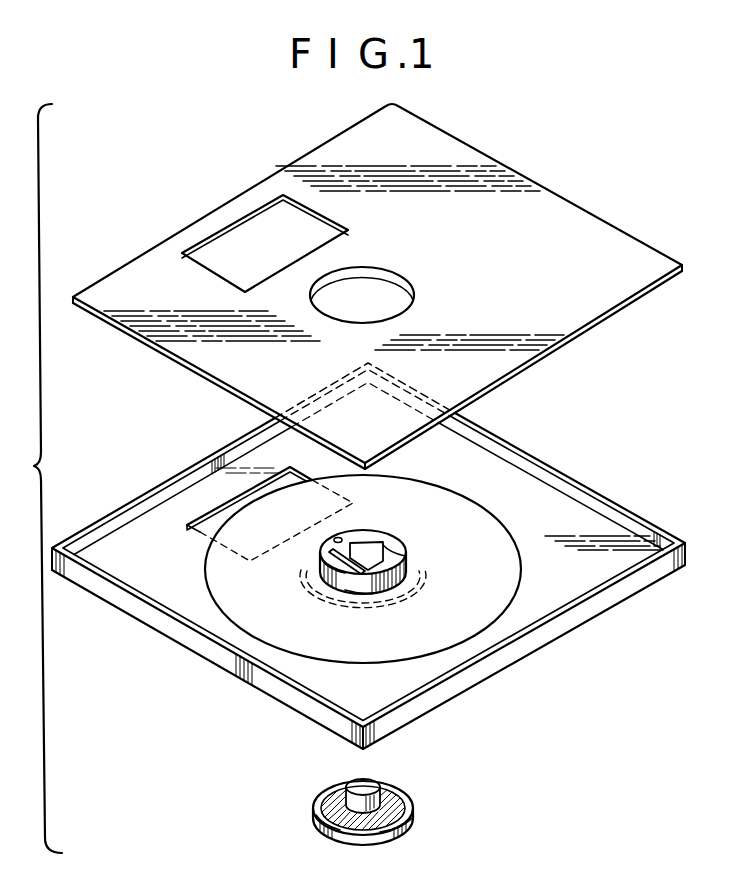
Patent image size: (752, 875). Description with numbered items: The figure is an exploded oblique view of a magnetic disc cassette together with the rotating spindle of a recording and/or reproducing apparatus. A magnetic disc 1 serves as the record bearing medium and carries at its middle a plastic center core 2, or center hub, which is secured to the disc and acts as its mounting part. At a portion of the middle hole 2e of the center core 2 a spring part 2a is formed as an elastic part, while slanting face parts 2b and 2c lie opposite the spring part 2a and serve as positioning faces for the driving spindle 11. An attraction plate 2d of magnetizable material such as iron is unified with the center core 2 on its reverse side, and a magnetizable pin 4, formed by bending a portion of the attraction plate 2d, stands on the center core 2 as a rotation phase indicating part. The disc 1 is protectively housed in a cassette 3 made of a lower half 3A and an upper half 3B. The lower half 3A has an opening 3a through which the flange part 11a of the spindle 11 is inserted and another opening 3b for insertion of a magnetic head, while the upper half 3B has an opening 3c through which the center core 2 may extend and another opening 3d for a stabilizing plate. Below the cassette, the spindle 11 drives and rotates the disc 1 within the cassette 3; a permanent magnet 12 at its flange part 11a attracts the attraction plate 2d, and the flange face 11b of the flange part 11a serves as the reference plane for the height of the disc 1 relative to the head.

The magnetic disc 1 is at (462, 505).
The center core 2 is at (402, 582).
The spring part 2a is at (328, 590).
The slanting face part 2b is at (370, 540).
The slanting face part 2c is at (400, 550).
The attraction plate 2d is at (380, 602).
The middle hole 2e is at (337, 540).
The cassette 3 is at (132, 440).
The lower half 3A is at (598, 517).
The upper half 3B is at (617, 233).
The opening 3a is at (303, 580).
The opening 3b is at (200, 533).
The opening 3c is at (392, 282).
The opening 3d is at (312, 222).
The magnetizable pin 4 is at (334, 539).
The driving spindle 11 is at (378, 790).
The flange part 11a is at (400, 842).
The flange face 11b is at (325, 795).
The permanent magnet 12 is at (383, 793).